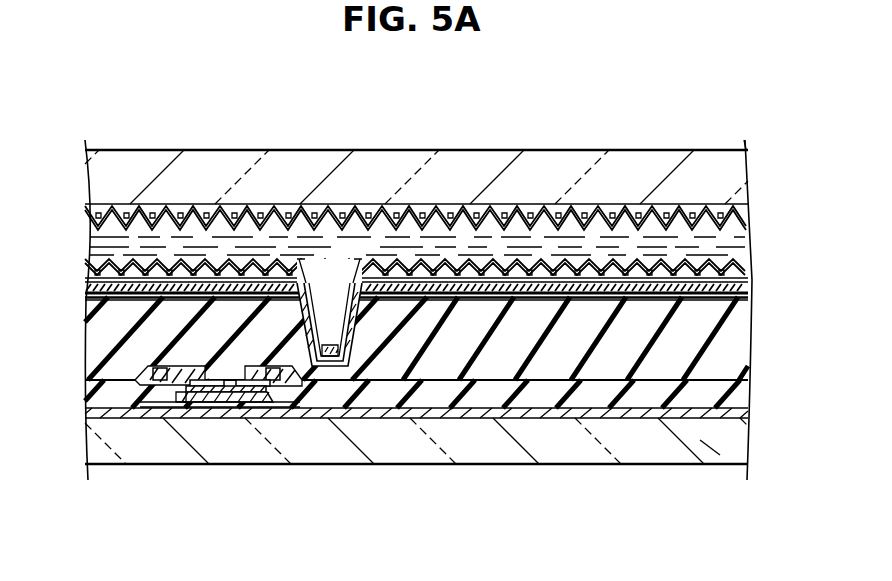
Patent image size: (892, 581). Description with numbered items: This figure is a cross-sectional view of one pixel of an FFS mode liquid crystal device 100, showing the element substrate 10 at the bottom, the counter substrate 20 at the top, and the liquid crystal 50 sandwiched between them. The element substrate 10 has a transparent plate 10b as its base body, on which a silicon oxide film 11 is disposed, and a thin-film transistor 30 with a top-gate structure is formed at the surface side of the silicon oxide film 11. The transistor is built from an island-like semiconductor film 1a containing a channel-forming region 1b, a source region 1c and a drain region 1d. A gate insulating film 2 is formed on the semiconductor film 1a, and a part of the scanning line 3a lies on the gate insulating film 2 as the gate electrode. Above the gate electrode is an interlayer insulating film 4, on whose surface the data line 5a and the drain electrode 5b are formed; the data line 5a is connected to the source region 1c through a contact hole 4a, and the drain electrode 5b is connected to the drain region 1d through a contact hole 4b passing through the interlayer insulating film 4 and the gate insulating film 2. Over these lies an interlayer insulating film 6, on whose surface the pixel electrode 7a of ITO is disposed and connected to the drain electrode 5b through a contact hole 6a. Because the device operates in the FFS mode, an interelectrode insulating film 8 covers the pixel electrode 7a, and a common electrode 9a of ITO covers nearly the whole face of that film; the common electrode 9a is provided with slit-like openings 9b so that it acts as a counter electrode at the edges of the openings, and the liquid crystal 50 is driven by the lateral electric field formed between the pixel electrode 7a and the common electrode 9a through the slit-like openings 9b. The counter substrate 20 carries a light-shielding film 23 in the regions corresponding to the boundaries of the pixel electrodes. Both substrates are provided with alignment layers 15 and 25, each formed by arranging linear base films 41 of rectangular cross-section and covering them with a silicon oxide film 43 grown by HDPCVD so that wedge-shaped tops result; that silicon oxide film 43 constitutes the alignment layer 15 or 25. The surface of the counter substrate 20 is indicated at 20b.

The liquid crystal device 100 is at (237, 130).
The counter substrate 20 is at (762, 150).
The counter substrate surface 20b is at (730, 152).
The light-shielding film 23 is at (294, 204).
The alignment layer 25 is at (411, 260).
The liquid crystal 50 is at (762, 216).
The alignment layer 15 is at (490, 283).
The slit-like openings 9b is at (615, 262).
The base films 41 is at (640, 290).
The silicon oxide film 43 is at (706, 282).
The interelectrode insulating film 8 is at (745, 294).
The common electrode 9a is at (680, 297).
The pixel electrode 7a is at (354, 300).
The contact hole 6a is at (360, 353).
The interlayer insulating film 6 is at (735, 343).
The interlayer insulating film 4 is at (735, 388).
The silicon oxide film 11 is at (732, 414).
The element substrate 10 is at (812, 465).
The transparent plate 10b is at (712, 452).
The thin-film transistor 30 is at (229, 374).
The scanning line 3a is at (242, 390).
The data line 5a is at (162, 370).
The drain electrode 5b is at (276, 370).
The contact hole 4a is at (150, 384).
The contact hole 4b is at (288, 380).
The semiconductor film 1a is at (214, 392).
The channel-forming region 1b is at (226, 388).
The source region 1c is at (185, 398).
The drain region 1d is at (258, 388).
The gate insulating film 2 is at (200, 405).